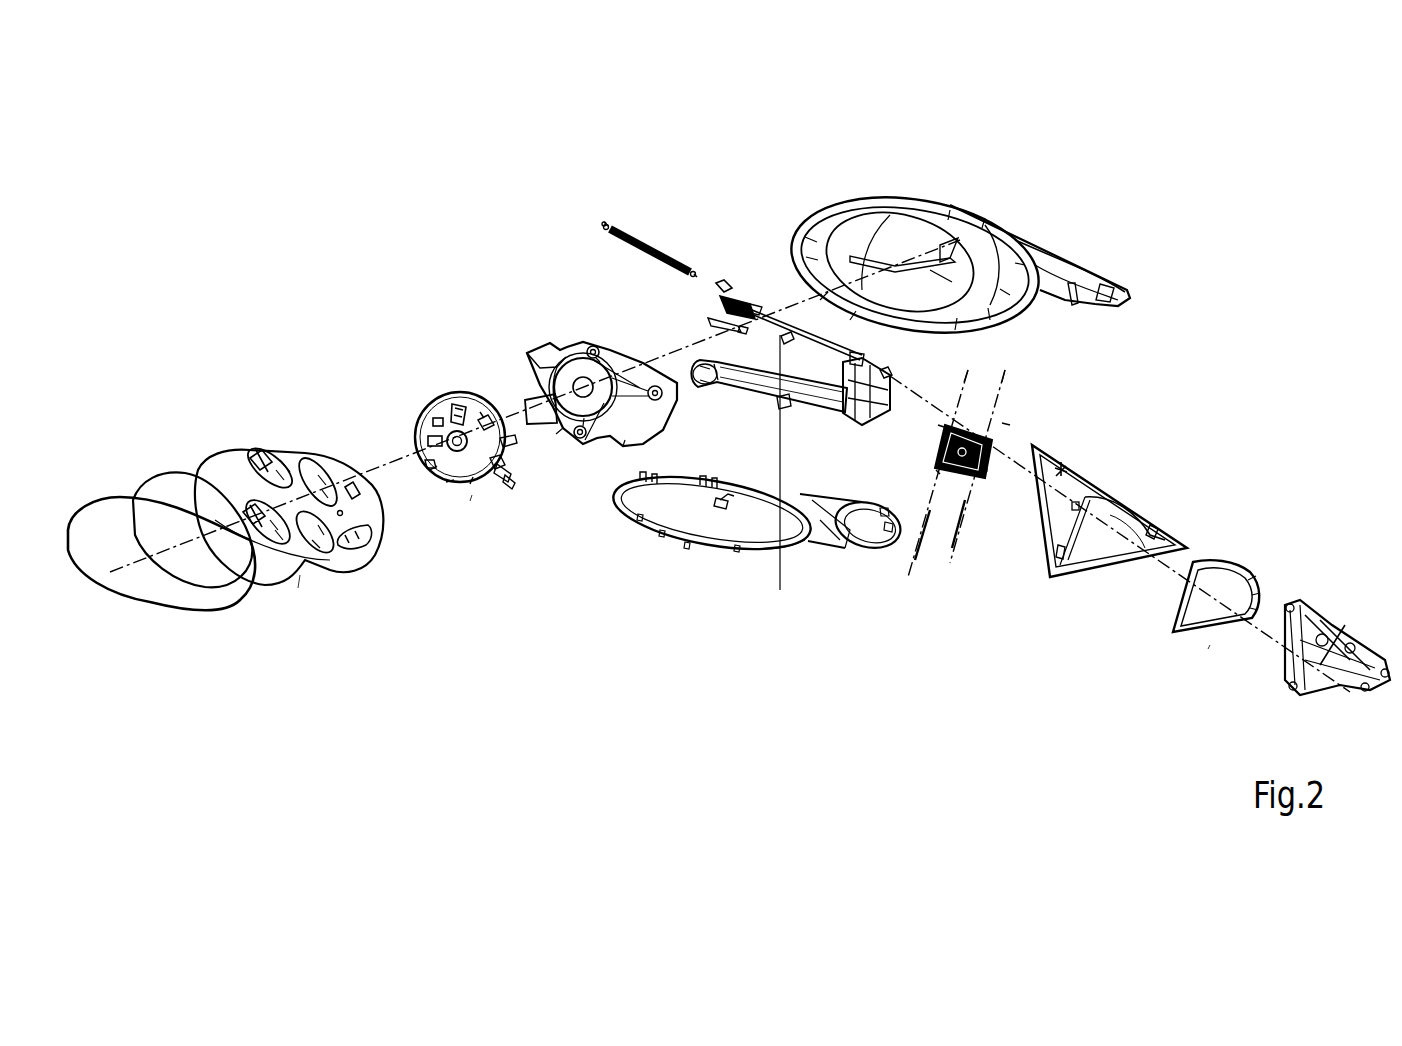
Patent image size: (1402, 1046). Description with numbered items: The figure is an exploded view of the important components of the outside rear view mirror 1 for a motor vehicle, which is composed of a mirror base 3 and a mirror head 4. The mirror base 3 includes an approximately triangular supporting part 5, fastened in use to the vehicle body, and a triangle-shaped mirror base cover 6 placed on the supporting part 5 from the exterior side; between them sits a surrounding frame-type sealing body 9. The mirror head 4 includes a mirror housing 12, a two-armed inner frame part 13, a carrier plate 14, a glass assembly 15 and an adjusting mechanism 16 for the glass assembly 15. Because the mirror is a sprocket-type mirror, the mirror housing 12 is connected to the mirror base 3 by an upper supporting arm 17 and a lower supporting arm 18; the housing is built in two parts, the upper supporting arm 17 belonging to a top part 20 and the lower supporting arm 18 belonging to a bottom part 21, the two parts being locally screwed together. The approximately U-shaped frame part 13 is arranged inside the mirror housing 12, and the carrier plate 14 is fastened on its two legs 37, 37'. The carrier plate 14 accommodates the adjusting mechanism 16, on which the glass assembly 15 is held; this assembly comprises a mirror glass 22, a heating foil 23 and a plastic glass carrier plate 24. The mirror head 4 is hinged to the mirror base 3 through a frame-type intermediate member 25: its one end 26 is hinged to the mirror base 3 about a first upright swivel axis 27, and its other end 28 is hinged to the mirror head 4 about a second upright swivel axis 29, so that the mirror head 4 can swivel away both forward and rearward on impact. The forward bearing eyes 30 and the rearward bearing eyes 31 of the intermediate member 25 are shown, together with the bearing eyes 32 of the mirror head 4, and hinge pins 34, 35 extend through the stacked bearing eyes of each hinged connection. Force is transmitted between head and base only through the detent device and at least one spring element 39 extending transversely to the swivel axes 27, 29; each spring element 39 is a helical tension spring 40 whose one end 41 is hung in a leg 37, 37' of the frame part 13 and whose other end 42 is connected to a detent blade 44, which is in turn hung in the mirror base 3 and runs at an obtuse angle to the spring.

The outside rear view mirror 1 is at (962, 190).
The mirror base 3 is at (1208, 650).
The mirror head 4 is at (470, 502).
The supporting part 5 is at (1355, 652).
The mirror base cover 6 is at (1083, 475).
The sealing body 9 is at (1258, 592).
The mirror housing 12 is at (840, 193).
The two-armed inner frame part 13 is at (800, 412).
The carrier plate 14 is at (578, 350).
The glass assembly 15 is at (298, 590).
The adjusting mechanism 16 is at (467, 392).
The upper supporting arm 17 is at (1070, 262).
The lower supporting arm 18 is at (818, 540).
The top part 20 is at (905, 190).
The bottom part 21 is at (695, 552).
The mirror glass 22 is at (112, 508).
The heating foil 23 is at (182, 481).
The glass carrier plate 24 is at (238, 460).
The intermediate member 25 is at (1003, 443).
The one end of the intermediate member 26 is at (935, 430).
The first upright swivel axis 27 is at (982, 390).
The other end of the intermediate member 28 is at (1013, 423).
The second upright swivel axis 29 is at (1007, 403).
The forward bearing eyes 30 is at (984, 472).
The rearward bearing eyes 31 is at (938, 472).
The bearing eyes of the mirror head 32 is at (890, 374).
The hinge pin 34 is at (921, 550).
The hinge pin 35 is at (960, 537).
The leg of the frame part 37 is at (794, 302).
The leg of the frame part 37' is at (769, 412).
The spring element 39 is at (651, 238).
The helical tension spring 40 is at (610, 243).
The one end of the helical tension spring 41 is at (602, 222).
The other end of the helical tension spring 42 is at (690, 279).
The detent blade 44 is at (720, 282).